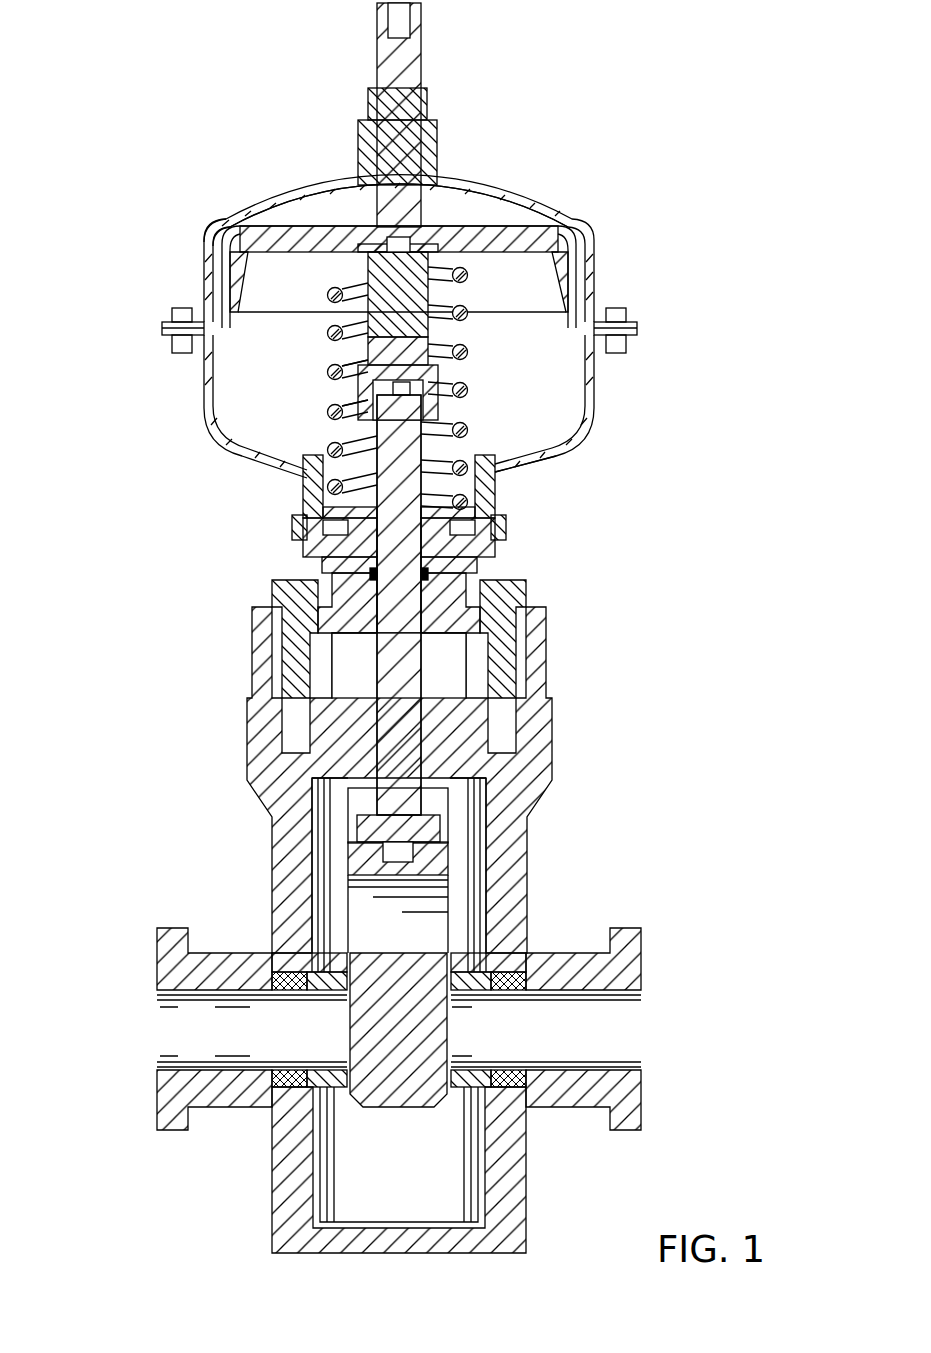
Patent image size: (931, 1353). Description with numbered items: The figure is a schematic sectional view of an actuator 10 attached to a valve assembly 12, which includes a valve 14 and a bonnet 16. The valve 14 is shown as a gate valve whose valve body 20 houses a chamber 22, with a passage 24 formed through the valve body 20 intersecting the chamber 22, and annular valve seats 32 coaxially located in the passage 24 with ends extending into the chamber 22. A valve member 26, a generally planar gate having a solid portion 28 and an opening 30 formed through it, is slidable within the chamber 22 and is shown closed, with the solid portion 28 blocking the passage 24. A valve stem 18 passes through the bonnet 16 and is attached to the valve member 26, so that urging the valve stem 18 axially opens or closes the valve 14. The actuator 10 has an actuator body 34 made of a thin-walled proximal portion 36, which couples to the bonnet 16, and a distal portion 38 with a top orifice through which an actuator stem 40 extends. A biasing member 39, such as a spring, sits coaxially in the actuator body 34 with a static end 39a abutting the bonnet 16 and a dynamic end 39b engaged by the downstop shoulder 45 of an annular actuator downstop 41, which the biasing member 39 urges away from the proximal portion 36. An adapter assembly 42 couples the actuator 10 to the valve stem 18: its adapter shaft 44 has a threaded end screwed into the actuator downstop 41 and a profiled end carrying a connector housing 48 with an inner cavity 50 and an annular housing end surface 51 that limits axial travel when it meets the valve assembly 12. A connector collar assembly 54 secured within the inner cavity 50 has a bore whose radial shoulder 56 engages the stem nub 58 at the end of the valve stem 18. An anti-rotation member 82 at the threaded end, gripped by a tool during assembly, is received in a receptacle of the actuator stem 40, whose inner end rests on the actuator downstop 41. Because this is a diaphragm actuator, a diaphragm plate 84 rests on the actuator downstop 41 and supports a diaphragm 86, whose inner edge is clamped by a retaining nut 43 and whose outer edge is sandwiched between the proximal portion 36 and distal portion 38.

The actuator 10 is at (732, 200).
The valve assembly 12 is at (640, 822).
The valve 14 is at (272, 877).
The bonnet 16 is at (525, 650).
The valve stem 18 is at (398, 742).
The valve body 20 is at (285, 1203).
The chamber 22 is at (350, 1142).
The passage 24 is at (195, 1062).
The valve member 26 is at (413, 1085).
The solid portion 28 is at (385, 1055).
The opening 30 is at (417, 878).
The annular valve seats 32 is at (300, 973).
The actuator body 34 is at (617, 392).
The proximal portion 36 is at (204, 376).
The distal portion 38 is at (204, 277).
The biasing member 39 is at (335, 330).
The static end 39a is at (305, 500).
The dynamic end 39b is at (560, 229).
The actuator stem 40 is at (408, 53).
The actuator downstop 41 is at (212, 243).
The adapter assembly 42 is at (478, 358).
The retaining nut 43 is at (358, 255).
The adapter shaft 44 is at (435, 292).
The downstop shoulder 45 is at (285, 212).
The connector housing 48 is at (440, 405).
The inner cavity 50 is at (438, 378).
The housing end surface 51 is at (555, 447).
The connector collar assembly 54 is at (367, 357).
The radial shoulder 56 is at (450, 460).
The stem nub 58 is at (363, 393).
The anti-rotation member 82 is at (412, 245).
The diaphragm plate 84 is at (298, 277).
The diaphragm 86 is at (218, 248).